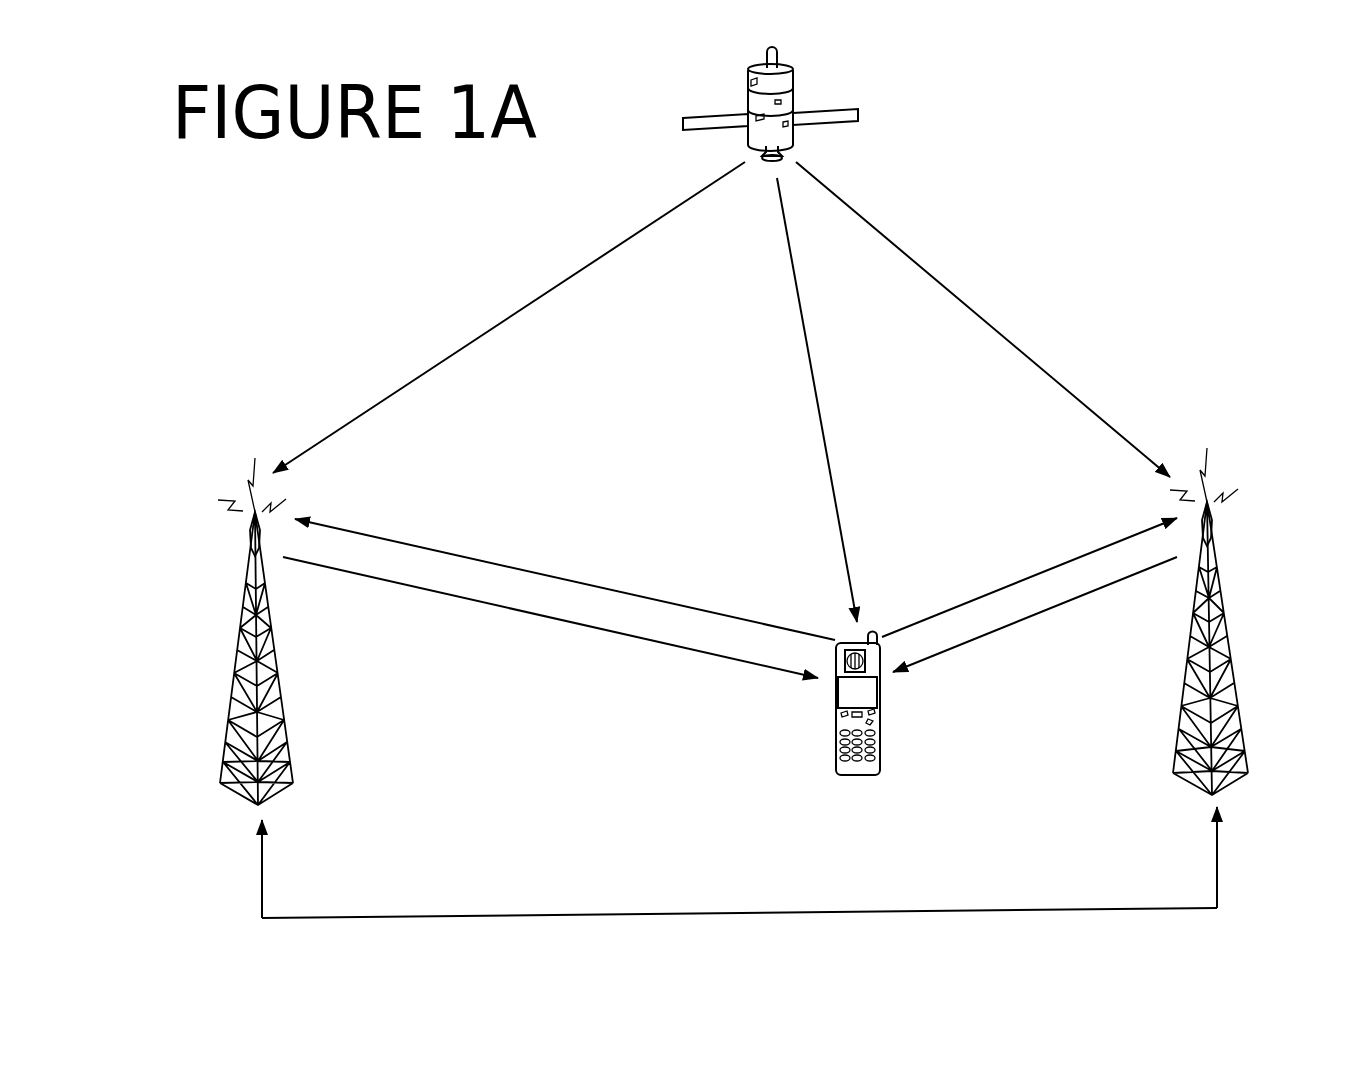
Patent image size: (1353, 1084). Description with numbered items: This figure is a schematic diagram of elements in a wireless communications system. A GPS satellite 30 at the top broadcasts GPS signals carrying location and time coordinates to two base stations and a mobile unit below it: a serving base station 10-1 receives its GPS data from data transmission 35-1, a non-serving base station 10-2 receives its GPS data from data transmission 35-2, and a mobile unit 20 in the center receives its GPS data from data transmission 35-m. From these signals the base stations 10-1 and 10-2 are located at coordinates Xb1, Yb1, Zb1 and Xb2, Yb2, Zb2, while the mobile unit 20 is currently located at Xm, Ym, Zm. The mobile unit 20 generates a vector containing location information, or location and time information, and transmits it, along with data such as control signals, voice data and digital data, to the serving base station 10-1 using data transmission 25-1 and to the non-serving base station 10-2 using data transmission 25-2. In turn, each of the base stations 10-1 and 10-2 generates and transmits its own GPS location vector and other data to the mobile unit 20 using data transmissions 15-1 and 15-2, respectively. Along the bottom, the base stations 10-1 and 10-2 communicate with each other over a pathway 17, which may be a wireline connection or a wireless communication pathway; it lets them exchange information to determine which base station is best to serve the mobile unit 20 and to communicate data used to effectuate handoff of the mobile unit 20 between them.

The GPS satellite 30 is at (774, 104).
The data transmission 35-1 is at (509, 317).
The data transmission 35-m is at (799, 400).
The data transmission 35-2 is at (983, 319).
The data transmission 25-2 is at (565, 579).
The data transmission 15-2 is at (550, 617).
The data transmission 25-1 is at (1029, 577).
The data transmission 15-1 is at (1035, 614).
The non-serving base station 10-2 is at (339, 635).
The serving base station 10-1 is at (1123, 621).
The mobile unit 20 is at (858, 736).
The pathway 17 is at (739, 880).